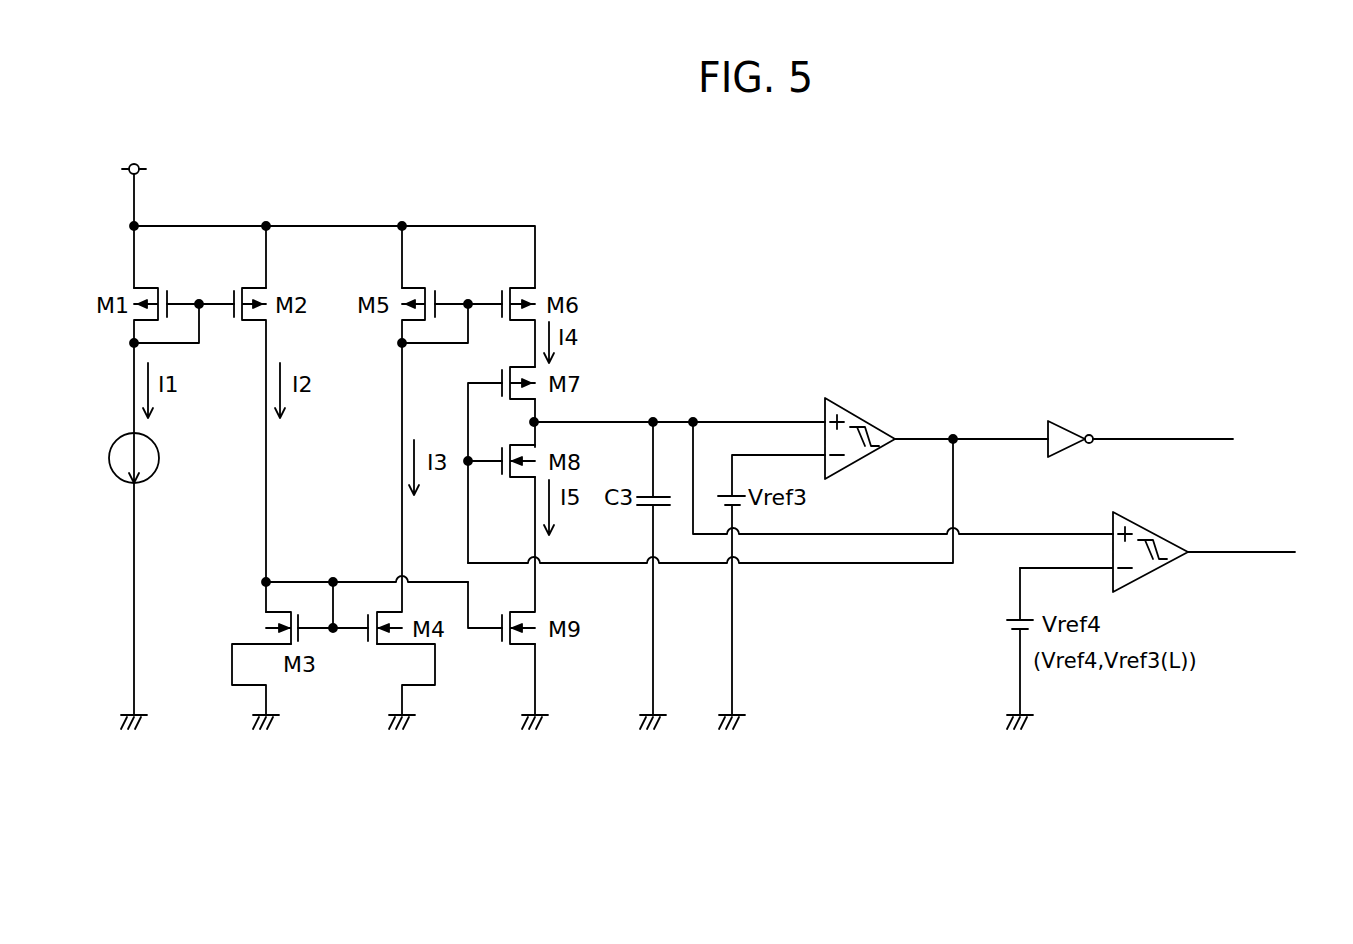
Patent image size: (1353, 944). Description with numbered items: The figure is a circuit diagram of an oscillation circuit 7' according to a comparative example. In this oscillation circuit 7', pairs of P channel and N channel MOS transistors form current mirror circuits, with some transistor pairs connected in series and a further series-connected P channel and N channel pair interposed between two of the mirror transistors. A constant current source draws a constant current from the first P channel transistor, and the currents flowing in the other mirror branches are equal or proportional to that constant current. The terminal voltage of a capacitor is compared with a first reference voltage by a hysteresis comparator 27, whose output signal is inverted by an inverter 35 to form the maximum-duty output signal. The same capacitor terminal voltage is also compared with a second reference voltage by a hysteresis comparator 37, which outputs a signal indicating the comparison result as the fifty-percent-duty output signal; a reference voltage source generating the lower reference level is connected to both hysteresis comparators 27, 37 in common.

The oscillation circuit 7' is at (768, 279).
The hysteresis comparator 27 is at (860, 412).
The inverter 35 is at (1060, 422).
The hysteresis comparator 37 is at (1148, 572).